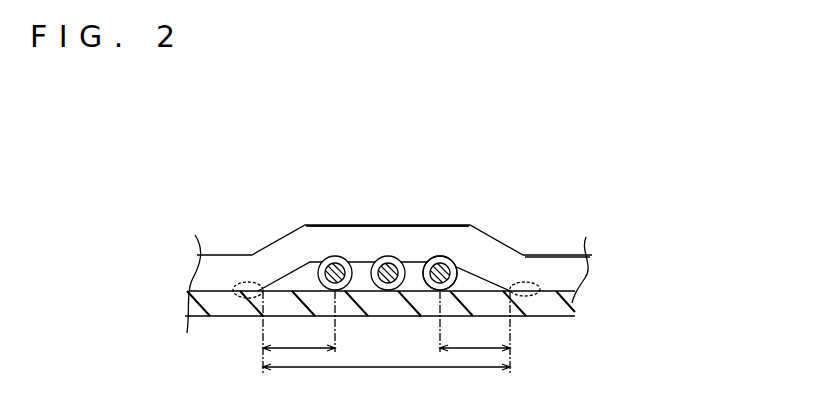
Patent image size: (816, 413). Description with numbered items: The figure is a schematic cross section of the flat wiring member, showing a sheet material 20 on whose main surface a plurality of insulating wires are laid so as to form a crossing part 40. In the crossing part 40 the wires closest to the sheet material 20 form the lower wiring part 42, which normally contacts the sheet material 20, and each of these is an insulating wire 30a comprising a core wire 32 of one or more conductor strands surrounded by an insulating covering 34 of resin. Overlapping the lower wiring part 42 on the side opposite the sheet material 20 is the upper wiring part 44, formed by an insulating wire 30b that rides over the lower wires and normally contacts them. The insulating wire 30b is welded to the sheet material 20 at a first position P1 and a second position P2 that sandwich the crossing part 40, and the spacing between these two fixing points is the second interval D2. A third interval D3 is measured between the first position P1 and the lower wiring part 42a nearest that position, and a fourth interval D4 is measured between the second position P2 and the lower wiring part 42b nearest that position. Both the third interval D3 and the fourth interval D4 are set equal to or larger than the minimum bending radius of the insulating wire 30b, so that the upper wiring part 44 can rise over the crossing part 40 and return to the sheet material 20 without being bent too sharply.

The sheet material 20 is at (520, 318).
The insulating wire 30a is at (552, 165).
The insulating wire 30b is at (574, 268).
The core wire 32 is at (450, 265).
The insulating covering 34 is at (448, 258).
The crossing part 40 is at (467, 165).
The lower wiring part 42 is at (362, 255).
The lower wiring part 42a is at (305, 262).
The lower wiring part 42b is at (435, 253).
The upper wiring part 44 is at (393, 236).
The first position P1 is at (242, 272).
The second position P2 is at (528, 280).
The second interval D2 is at (386, 355).
The third interval D3 is at (299, 334).
The fourth interval D4 is at (475, 334).